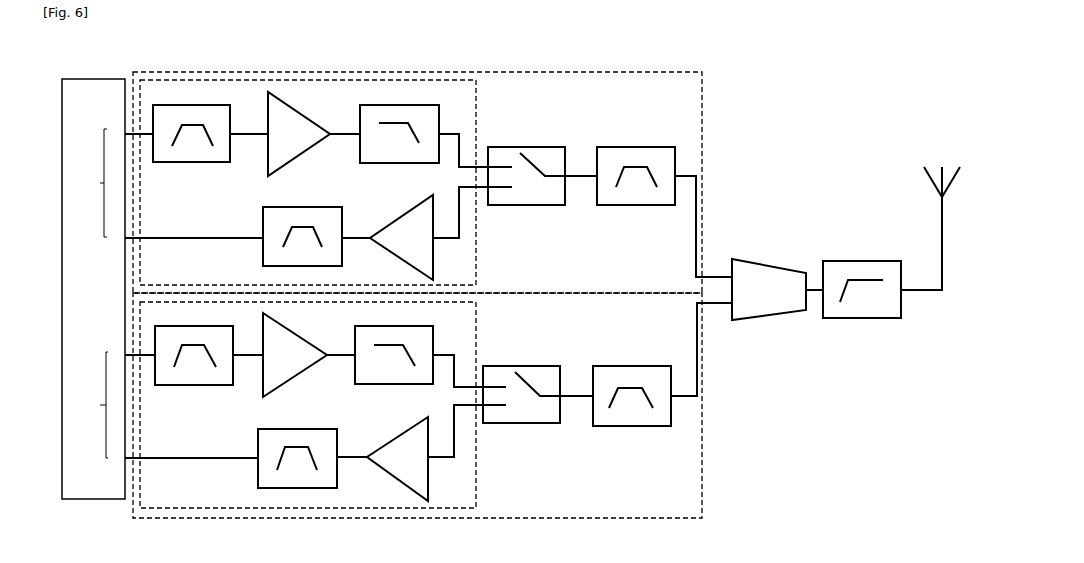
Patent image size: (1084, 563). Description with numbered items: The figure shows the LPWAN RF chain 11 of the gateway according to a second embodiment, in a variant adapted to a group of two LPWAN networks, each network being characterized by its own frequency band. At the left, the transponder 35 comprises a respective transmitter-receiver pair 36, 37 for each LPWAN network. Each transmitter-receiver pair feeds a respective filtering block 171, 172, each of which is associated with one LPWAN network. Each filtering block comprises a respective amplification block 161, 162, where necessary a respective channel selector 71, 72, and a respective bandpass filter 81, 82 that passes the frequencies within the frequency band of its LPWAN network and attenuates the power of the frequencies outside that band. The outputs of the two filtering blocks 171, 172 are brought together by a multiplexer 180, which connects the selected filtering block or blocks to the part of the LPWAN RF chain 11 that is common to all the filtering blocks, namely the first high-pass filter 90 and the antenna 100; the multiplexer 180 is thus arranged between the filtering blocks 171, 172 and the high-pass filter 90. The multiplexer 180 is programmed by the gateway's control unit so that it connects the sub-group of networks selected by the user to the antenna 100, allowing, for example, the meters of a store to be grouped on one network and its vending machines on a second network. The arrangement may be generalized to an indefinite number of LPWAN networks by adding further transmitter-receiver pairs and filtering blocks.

The LPWAN RF chain 11 is at (842, 407).
The transponder 35 is at (92, 79).
The transmitter-receiver pair 36 is at (92, 183).
The transmitter-receiver pair 37 is at (92, 405).
The channel selector 71 is at (522, 143).
The channel selector 72 is at (522, 362).
The bandpass filter 81 is at (638, 145).
The bandpass filter 82 is at (632, 365).
The first high-pass filter 90 is at (860, 260).
The antenna 100 is at (937, 170).
The amplification block 161 is at (478, 232).
The amplification block 162 is at (478, 494).
The filtering block 171 is at (702, 122).
The filtering block 172 is at (703, 455).
The multiplexer 180 is at (766, 265).